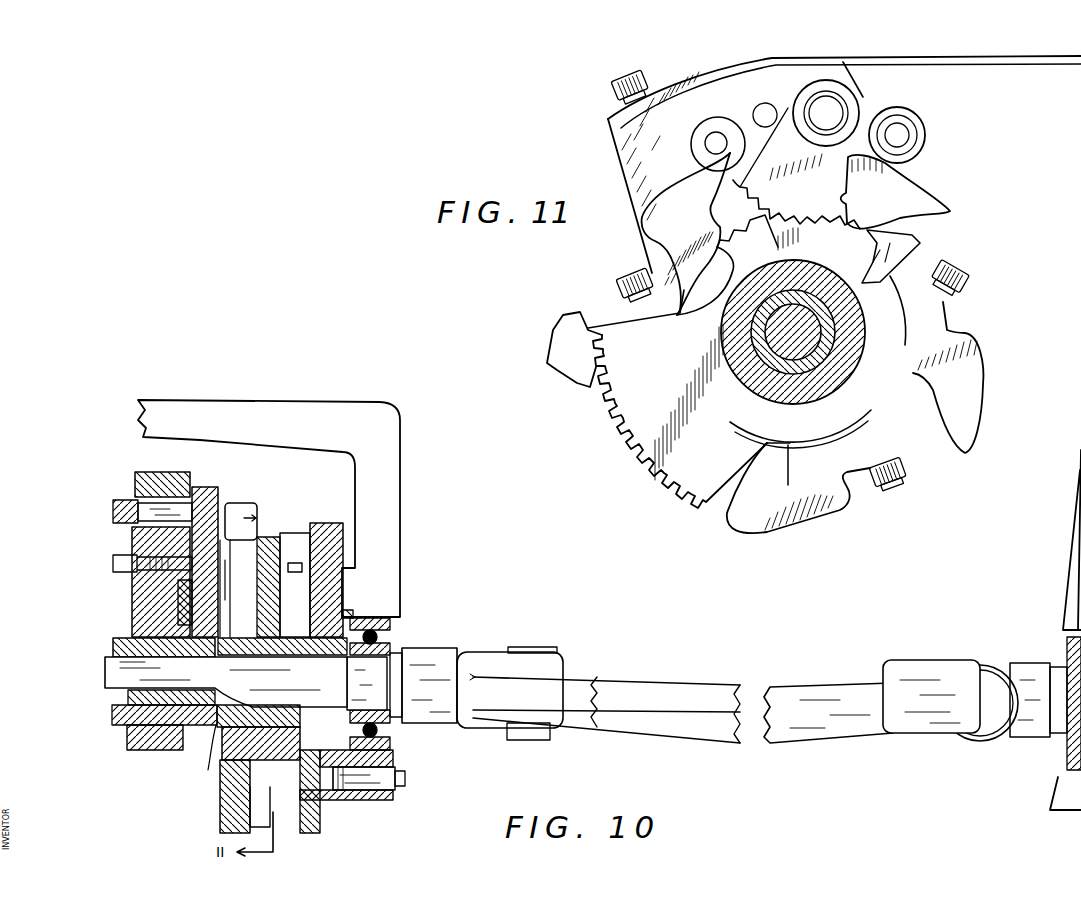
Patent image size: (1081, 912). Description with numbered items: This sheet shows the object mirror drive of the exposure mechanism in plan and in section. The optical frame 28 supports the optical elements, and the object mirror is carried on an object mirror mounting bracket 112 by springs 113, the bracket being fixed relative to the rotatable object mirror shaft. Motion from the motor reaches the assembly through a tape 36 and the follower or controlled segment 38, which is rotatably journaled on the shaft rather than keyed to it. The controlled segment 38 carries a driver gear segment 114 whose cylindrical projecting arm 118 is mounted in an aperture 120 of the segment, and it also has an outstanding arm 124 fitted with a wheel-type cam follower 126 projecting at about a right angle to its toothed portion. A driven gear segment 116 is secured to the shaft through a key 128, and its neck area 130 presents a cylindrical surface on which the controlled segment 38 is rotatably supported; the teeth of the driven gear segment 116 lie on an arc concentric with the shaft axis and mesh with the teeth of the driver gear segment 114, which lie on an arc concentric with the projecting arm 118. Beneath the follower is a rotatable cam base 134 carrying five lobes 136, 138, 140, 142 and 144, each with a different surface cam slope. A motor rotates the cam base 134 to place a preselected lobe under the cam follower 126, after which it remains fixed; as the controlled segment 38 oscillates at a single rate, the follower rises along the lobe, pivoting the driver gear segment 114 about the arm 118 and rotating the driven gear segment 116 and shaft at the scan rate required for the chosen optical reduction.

In FIG. 10, the optical frame 28 is at (386, 503).
In FIG. 11, the tape 36 is at (913, 56).
In FIG. 11, the controlled segment 38 is at (610, 131).
In FIG. 10, the controlled segment 38 is at (170, 474).
In FIG. 10, the object mirror mounting bracket 112 is at (888, 727).
In FIG. 10, the springs 113 is at (538, 648).
In FIG. 11, the driver gear segment 114 is at (748, 186).
In FIG. 10, the driver gear segment 114 is at (187, 585).
In FIG. 11, the driven gear segment 116 is at (871, 244).
In FIG. 10, the driven gear segment 116 is at (195, 610).
In FIG. 10, the cylindrical projecting arm 118 is at (113, 509).
In FIG. 10, the aperture 120 is at (176, 497).
In FIG. 11, the outstanding arm 124 is at (862, 109).
In FIG. 11, the cam follower 126 is at (922, 127).
In FIG. 10, the cam follower 126 is at (246, 502).
In FIG. 10, the key 128 is at (188, 652).
In FIG. 10, the neck area 130 is at (112, 641).
In FIG. 11, the cam base 134 is at (622, 336).
In FIG. 10, the cam base 134 is at (270, 787).
In FIG. 11, the lobe 136 is at (690, 180).
In FIG. 10, the lobe 136 is at (264, 571).
In FIG. 11, the lobe 138 is at (912, 187).
In FIG. 11, the lobe 140 is at (973, 367).
In FIG. 10, the lobe 140 is at (218, 813).
In FIG. 11, the lobe 142 is at (810, 514).
In FIG. 10, the lobe 144 is at (206, 490).